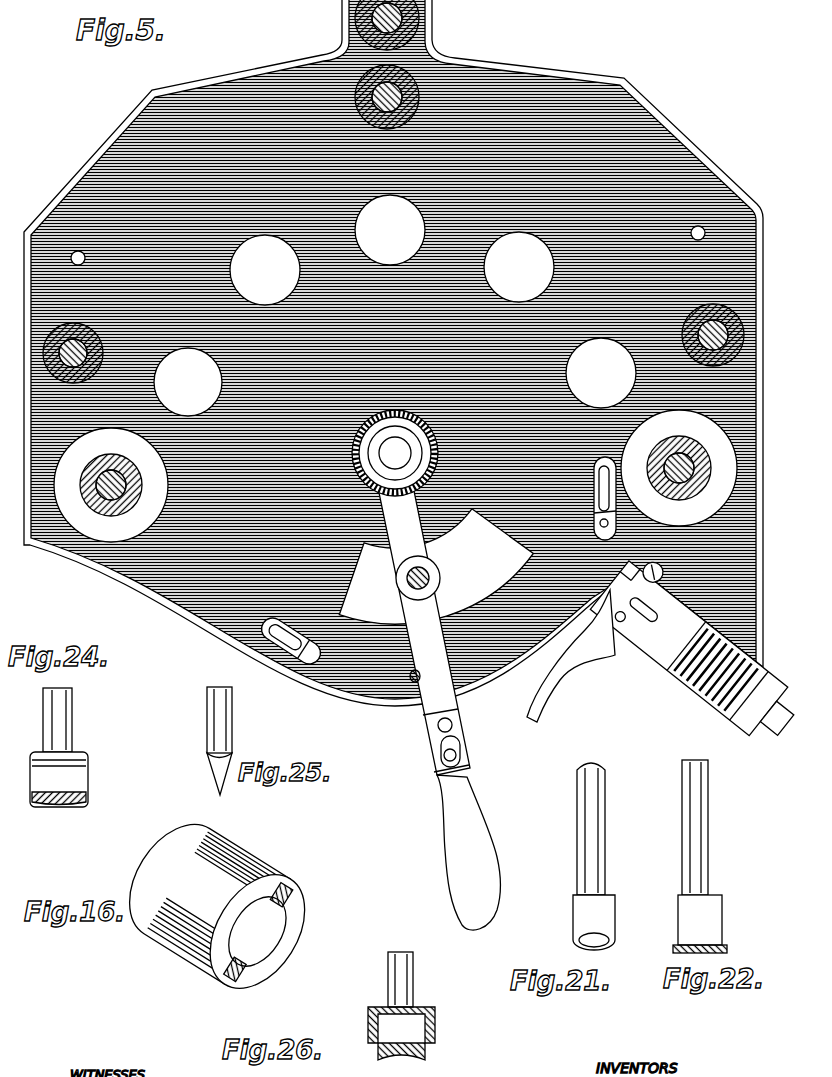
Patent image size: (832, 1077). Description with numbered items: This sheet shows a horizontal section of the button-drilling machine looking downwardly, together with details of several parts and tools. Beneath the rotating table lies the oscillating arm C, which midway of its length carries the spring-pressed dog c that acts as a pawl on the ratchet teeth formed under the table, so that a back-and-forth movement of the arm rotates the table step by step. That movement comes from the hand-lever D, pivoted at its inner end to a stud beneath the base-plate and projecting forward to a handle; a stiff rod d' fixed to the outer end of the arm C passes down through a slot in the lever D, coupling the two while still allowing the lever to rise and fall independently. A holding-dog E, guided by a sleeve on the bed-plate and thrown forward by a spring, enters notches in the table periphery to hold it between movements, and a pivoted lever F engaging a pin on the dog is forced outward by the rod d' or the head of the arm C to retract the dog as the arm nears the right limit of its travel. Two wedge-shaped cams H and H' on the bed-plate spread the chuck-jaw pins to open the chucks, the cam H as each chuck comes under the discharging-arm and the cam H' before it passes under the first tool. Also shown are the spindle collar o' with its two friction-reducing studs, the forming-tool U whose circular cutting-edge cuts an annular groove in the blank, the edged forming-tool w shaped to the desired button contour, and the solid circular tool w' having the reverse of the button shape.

In FIG. 5, the arm C is at (423, 623).
In FIG. 5, the dog c is at (417, 567).
In FIG. 5, the hand-lever D is at (470, 842).
In FIG. 5, the rod d' is at (463, 718).
In FIG. 5, the wedge-shaped cam H is at (619, 498).
In FIG. 5, the wedge-shaped cam H' is at (290, 661).
In FIG. 5, the holding-dog E is at (702, 648).
In FIG. 5, the pivoted lever F is at (534, 727).
In FIG. 24, the pin w is at (74, 747).
In FIG. 25, the pin w is at (202, 741).
In FIG. 16, the collar o' is at (217, 906).
In FIG. 21, the forming-tool U is at (579, 856).
In FIG. 22, the forming-tool U is at (706, 856).
In FIG. 26, the pin socket w' is at (422, 1006).